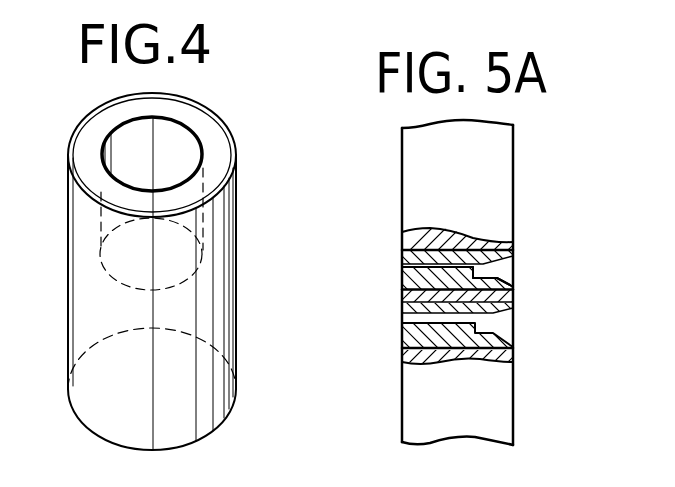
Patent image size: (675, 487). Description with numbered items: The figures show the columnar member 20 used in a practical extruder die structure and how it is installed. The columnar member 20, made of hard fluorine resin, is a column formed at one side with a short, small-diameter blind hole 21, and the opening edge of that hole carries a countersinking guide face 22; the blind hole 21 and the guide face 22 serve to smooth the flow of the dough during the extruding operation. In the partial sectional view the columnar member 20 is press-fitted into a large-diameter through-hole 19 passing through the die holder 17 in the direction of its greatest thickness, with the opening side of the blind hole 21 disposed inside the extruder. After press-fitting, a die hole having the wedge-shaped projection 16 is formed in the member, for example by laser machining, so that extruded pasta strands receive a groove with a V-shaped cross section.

In FIG. 5A, the wedge-shaped projection 16 is at (462, 272).
In FIG. 5A, the die holder 17 is at (412, 157).
In FIG. 5A, the through-hole 19 is at (403, 258).
In FIG. 4, the columnar member 20 is at (233, 255).
In FIG. 5A, the columnar member 20 is at (402, 280).
In FIG. 4, the blind hole 21 is at (193, 148).
In FIG. 5A, the blind hole 21 is at (513, 262).
In FIG. 4, the countersinking guide face 22 is at (98, 131).
In FIG. 5A, the countersinking guide face 22 is at (513, 284).